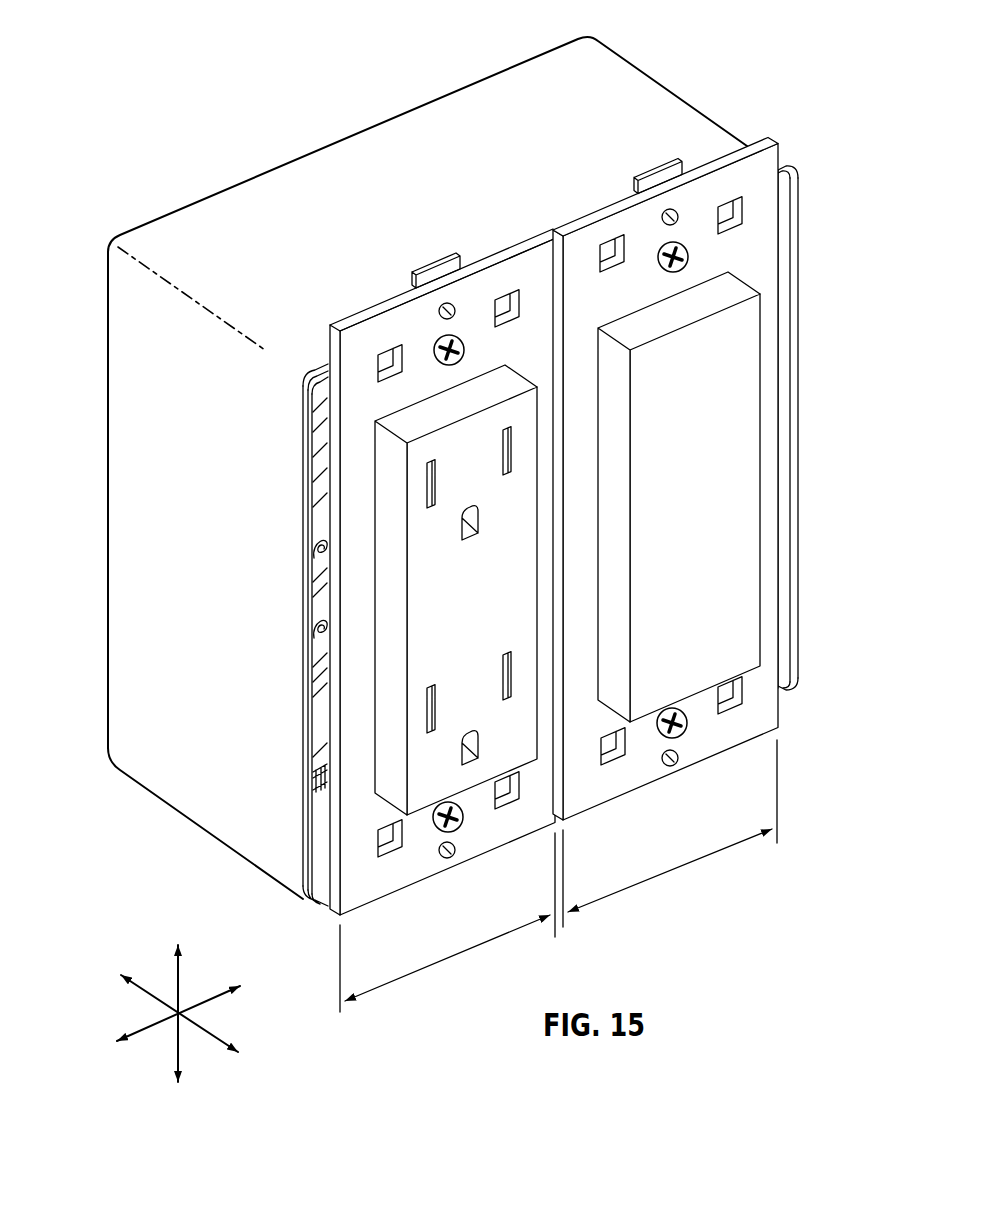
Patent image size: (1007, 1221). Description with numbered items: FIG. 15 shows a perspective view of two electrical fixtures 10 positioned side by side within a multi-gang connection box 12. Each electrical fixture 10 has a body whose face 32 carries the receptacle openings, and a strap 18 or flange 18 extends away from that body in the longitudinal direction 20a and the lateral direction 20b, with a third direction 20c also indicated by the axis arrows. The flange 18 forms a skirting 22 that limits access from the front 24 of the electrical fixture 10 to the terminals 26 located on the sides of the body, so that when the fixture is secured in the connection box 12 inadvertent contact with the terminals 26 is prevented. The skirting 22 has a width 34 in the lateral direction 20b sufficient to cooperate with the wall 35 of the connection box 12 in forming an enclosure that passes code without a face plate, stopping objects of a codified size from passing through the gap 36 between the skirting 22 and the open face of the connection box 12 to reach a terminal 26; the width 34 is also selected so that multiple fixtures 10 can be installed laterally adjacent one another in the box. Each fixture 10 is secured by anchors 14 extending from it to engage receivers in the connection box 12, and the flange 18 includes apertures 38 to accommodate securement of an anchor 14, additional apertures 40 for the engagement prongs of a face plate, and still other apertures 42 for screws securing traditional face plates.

The electrical fixture 10 is at (809, 452).
The connection box 12 is at (650, 60).
The anchor 14 is at (323, 775).
The strap 18 is at (759, 232).
The longitudinal direction 20a is at (180, 967).
The lateral direction 20b is at (222, 1000).
The depth direction 20c is at (207, 1035).
The skirting 22 is at (365, 660).
The front 24 is at (741, 505).
The terminals 26 is at (318, 552).
The face 32 is at (455, 623).
The width 34 is at (478, 946).
The wall 35 is at (176, 476).
The gap 36 is at (318, 893).
The apertures 38 is at (458, 326).
The apertures 40 is at (388, 344).
The apertures 42 is at (434, 323).